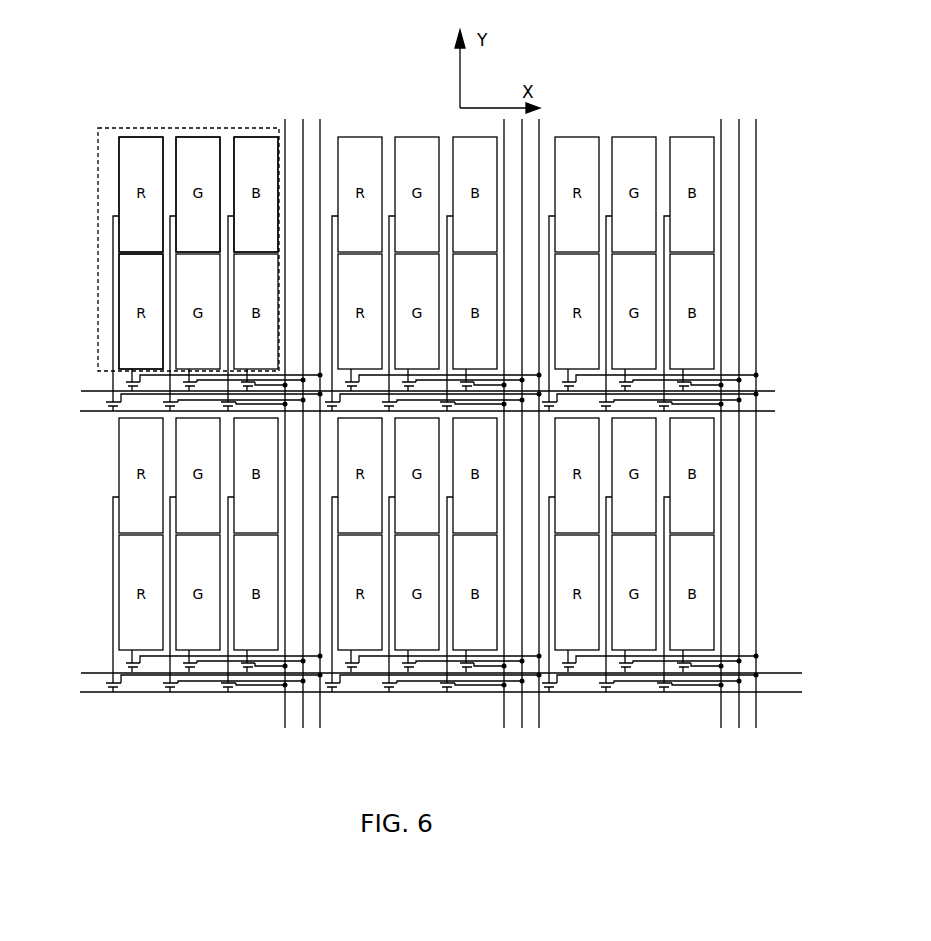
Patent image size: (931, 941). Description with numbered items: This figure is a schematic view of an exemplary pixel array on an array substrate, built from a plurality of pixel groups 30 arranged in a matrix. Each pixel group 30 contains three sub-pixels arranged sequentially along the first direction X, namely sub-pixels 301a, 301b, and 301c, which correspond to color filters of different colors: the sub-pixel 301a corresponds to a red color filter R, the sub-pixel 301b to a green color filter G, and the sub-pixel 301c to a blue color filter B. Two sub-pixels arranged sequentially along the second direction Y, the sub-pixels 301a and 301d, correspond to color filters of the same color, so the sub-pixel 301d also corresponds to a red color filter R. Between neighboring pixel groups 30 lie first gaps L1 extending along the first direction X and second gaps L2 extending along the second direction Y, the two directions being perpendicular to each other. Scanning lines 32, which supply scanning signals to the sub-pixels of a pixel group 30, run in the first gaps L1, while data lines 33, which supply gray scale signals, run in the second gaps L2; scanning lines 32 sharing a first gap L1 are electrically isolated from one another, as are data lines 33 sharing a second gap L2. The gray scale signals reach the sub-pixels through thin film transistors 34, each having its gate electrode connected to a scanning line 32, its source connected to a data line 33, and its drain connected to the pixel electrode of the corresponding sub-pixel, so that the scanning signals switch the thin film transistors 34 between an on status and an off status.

The pixel group 30 is at (98, 128).
The sub-pixel 301a is at (141, 147).
The sub-pixel 301b is at (196, 147).
The sub-pixel 301c is at (252, 147).
The sub-pixel 301d is at (138, 286).
The second gap L2 is at (292, 134).
The data line 33 is at (321, 140).
The scanning line 32 is at (766, 390).
The first gap L1 is at (101, 401).
The thin film transistor 34 is at (127, 663).